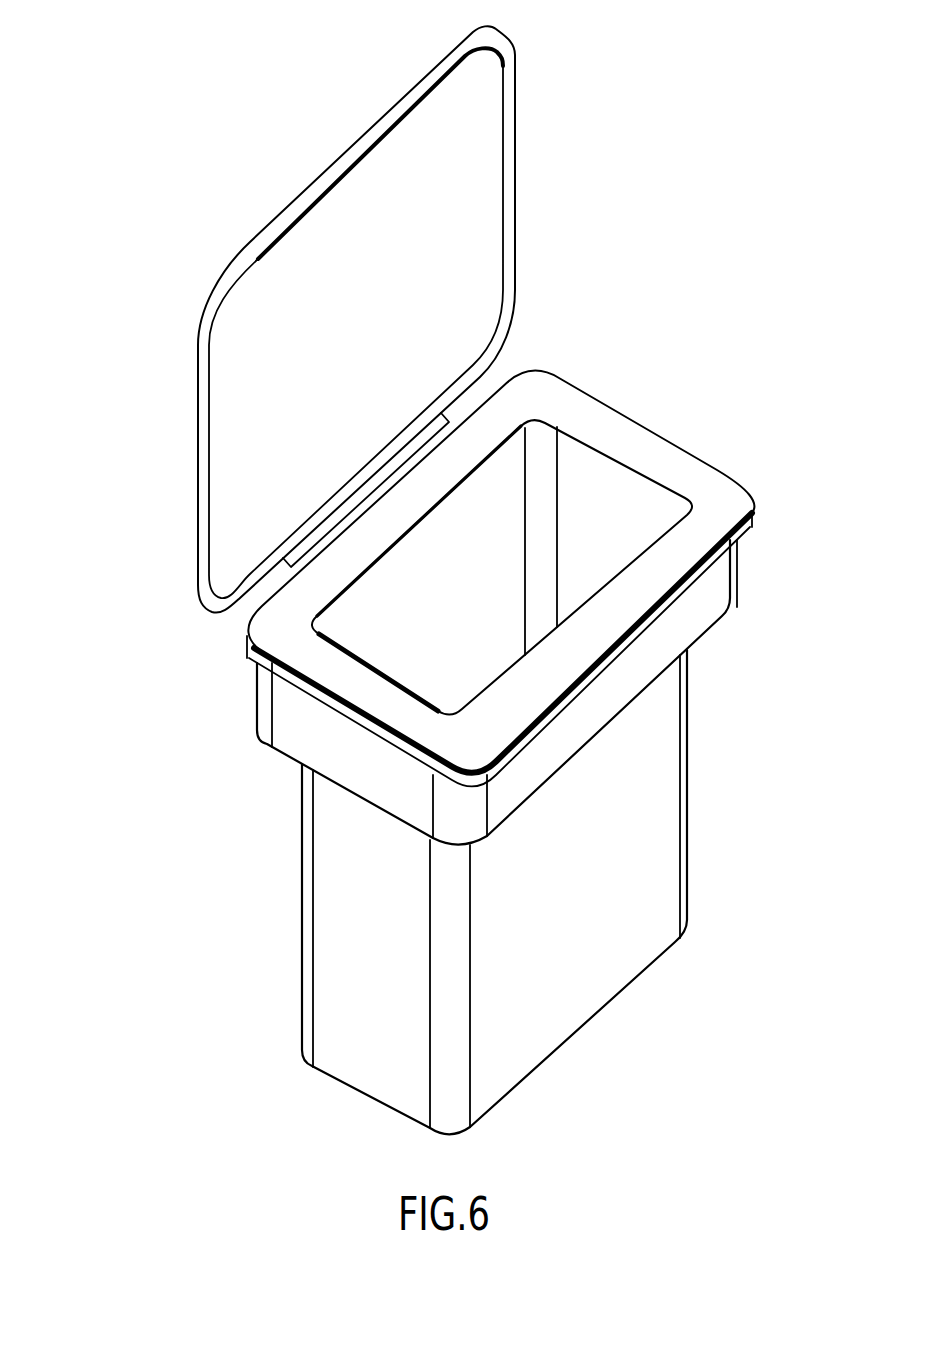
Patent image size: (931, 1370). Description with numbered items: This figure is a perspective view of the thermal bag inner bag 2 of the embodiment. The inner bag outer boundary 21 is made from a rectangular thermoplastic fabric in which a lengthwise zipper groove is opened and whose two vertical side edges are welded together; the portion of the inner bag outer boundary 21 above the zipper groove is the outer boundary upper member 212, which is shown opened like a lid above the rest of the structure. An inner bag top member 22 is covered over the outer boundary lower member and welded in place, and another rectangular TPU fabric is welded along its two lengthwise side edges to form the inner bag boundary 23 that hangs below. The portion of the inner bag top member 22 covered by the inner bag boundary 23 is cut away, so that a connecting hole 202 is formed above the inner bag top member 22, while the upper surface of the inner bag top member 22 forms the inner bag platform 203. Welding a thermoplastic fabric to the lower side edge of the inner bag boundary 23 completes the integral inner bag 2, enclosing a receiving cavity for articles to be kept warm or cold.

The thermal bag inner bag 2 is at (190, 783).
The inner bag outer boundary 21 is at (714, 616).
The inner bag top member 22 is at (650, 420).
The inner bag boundary 23 is at (638, 957).
The connecting hole 202 is at (549, 633).
The inner bag platform 203 is at (490, 727).
The outer boundary upper member 212 is at (330, 174).